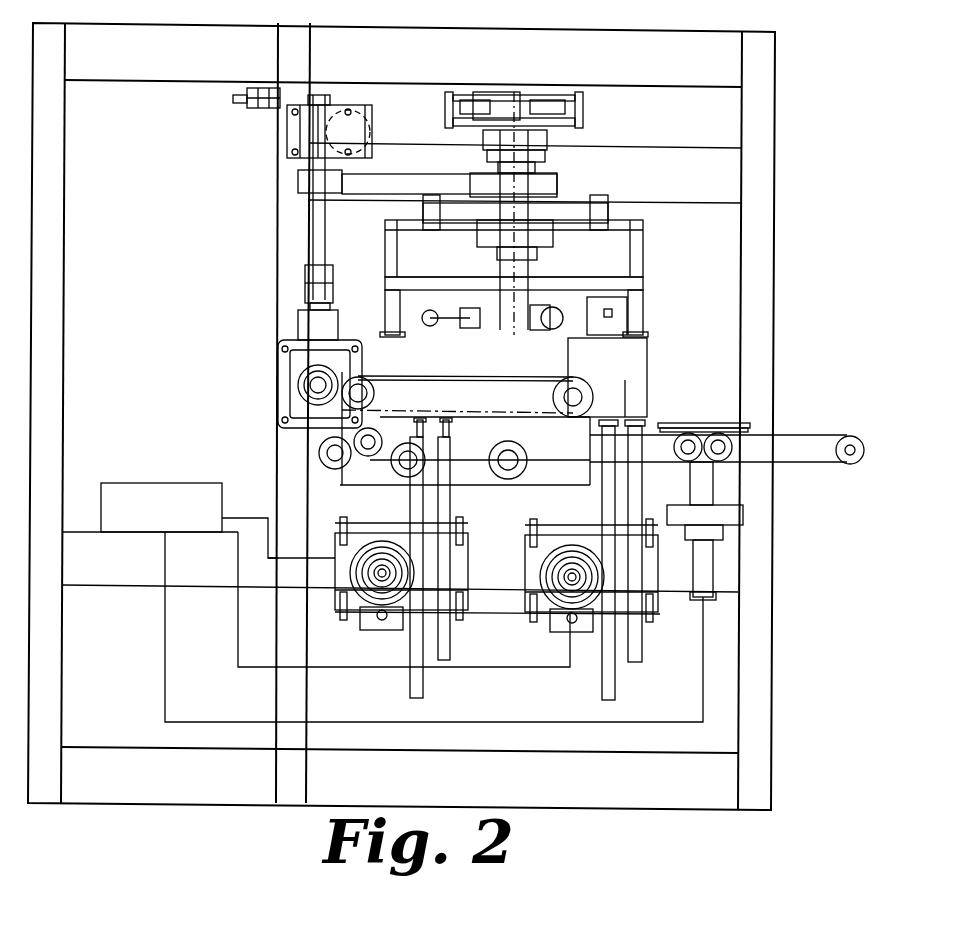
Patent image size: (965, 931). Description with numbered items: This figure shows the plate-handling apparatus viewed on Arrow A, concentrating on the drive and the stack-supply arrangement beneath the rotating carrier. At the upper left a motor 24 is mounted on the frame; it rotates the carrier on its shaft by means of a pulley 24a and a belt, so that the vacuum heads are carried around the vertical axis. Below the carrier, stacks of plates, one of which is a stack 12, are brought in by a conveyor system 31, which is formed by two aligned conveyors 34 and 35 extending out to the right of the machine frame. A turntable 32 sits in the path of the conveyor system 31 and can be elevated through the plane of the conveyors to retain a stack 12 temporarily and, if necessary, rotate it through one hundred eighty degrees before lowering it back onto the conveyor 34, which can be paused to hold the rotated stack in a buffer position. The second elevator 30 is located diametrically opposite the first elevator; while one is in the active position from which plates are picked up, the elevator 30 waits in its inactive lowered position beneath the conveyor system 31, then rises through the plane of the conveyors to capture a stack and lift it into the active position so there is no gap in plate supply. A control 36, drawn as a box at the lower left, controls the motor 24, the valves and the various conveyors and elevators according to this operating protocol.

The stack 12 is at (627, 360).
The motor 24 is at (293, 382).
The pulley 24a is at (387, 183).
The elevator 30 is at (580, 488).
The conveyor system 31 is at (832, 404).
The turntable 32 is at (723, 420).
The conveyor 34 is at (657, 453).
The conveyor 35 is at (837, 435).
The control 36 is at (155, 511).